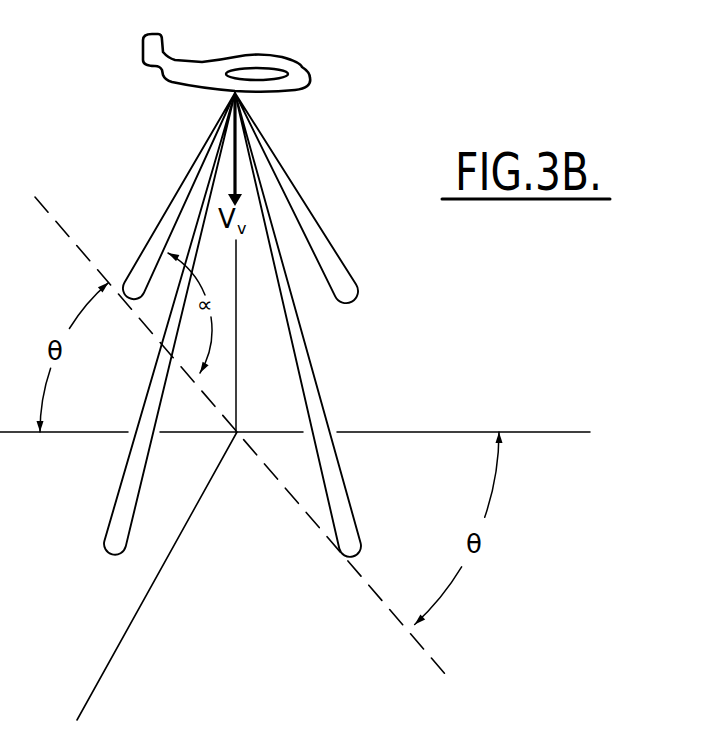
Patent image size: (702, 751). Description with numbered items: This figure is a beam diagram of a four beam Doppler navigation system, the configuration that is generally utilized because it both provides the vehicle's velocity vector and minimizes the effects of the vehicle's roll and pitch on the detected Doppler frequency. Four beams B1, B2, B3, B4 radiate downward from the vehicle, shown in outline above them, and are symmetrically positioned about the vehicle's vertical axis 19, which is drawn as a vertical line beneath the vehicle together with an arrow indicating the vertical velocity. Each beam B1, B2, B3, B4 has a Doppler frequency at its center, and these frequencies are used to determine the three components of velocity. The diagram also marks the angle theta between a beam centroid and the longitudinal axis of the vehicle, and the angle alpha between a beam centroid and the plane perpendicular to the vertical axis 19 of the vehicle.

The beam B1 is at (122, 477).
The beam B2 is at (347, 493).
The beam B3 is at (313, 216).
The beam B4 is at (171, 202).
The vertical axis 19 is at (236, 360).